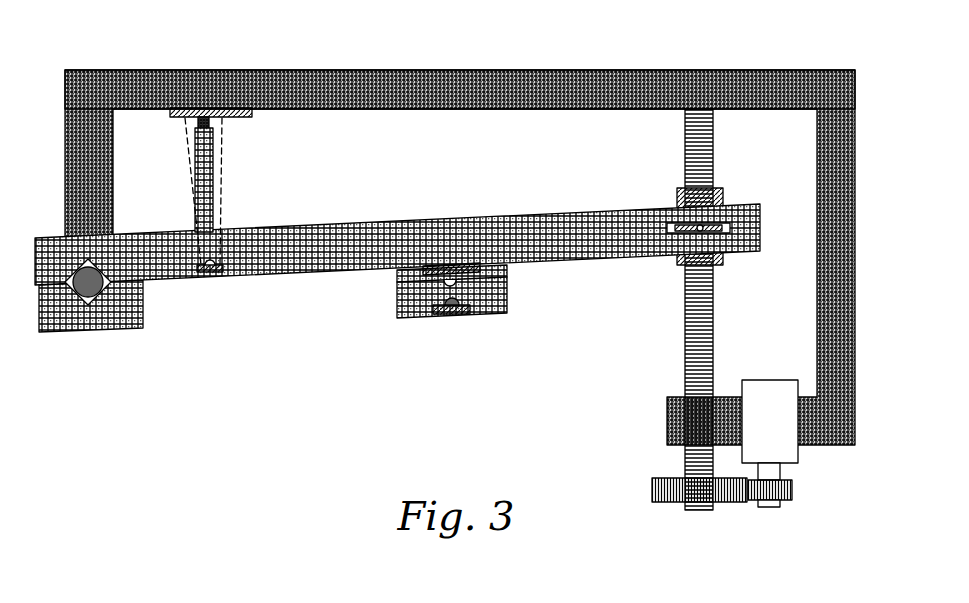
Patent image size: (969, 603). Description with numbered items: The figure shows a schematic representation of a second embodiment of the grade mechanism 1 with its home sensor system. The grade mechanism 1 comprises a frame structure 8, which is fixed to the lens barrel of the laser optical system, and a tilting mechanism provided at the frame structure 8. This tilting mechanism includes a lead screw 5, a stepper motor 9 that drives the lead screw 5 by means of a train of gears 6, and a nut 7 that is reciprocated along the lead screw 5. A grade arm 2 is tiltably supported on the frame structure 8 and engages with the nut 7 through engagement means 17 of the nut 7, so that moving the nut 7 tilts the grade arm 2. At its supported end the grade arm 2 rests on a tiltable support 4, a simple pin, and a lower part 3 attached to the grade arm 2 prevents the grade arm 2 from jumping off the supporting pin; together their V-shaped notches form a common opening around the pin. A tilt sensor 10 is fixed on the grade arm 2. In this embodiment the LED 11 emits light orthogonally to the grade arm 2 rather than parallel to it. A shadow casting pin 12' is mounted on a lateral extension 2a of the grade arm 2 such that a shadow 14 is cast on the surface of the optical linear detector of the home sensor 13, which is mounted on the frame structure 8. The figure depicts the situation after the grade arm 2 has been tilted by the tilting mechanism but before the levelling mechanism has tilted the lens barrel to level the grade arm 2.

The grade mechanism 1 is at (400, 52).
The grade arm 2 is at (353, 250).
The lateral extension 2a is at (207, 188).
The lower part 3 is at (125, 313).
The tiltable support 4 is at (88, 290).
The lead screw 5 is at (697, 118).
The train of gears 6 is at (688, 493).
The nut 7 is at (680, 193).
The frame structure 8 is at (513, 93).
The stepper motor 9 is at (783, 437).
The tilt sensor 10 is at (410, 333).
The LED 11 is at (210, 272).
The shadow casting pin 12' is at (247, 152).
The home sensor 13 is at (197, 116).
The shadow 14 is at (208, 125).
The engagement means 17 is at (700, 228).